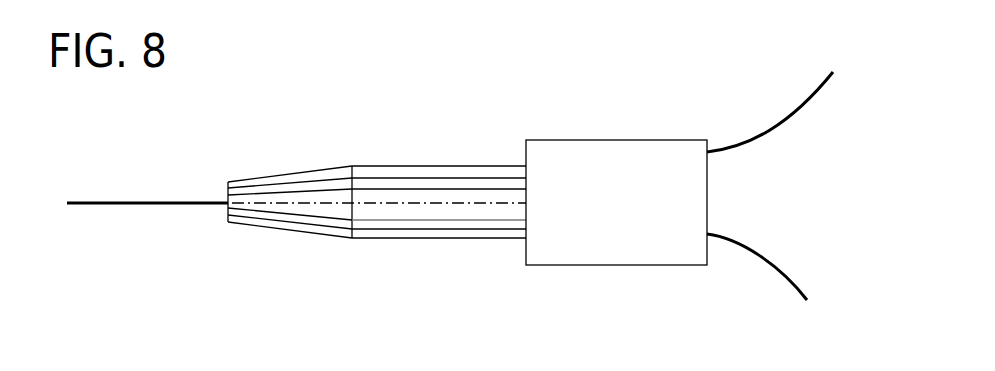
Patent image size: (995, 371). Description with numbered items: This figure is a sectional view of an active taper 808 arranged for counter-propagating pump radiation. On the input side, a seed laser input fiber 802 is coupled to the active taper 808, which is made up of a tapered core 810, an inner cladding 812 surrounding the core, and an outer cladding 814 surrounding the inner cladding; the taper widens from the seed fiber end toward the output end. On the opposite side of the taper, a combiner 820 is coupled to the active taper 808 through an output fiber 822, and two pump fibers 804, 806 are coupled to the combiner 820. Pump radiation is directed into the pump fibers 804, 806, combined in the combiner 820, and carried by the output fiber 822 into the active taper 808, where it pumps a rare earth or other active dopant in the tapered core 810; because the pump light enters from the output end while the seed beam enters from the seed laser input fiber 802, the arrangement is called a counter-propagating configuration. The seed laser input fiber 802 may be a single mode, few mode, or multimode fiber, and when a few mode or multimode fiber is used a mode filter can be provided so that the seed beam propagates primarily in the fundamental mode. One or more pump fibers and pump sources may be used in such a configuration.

The seed laser input fiber 802 is at (105, 205).
The pump fiber 804 is at (770, 270).
The pump fiber 806 is at (777, 132).
The active taper 808 is at (314, 65).
The tapered core 810 is at (335, 203).
The inner cladding 812 is at (305, 177).
The outer cladding 814 is at (302, 223).
The combiner 820 is at (595, 258).
The output fiber 822 is at (432, 238).